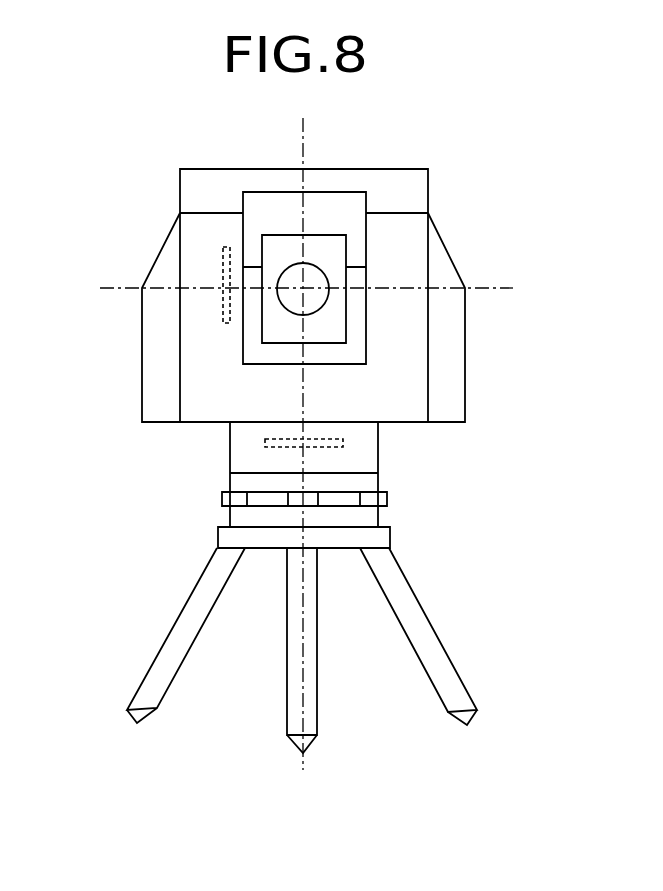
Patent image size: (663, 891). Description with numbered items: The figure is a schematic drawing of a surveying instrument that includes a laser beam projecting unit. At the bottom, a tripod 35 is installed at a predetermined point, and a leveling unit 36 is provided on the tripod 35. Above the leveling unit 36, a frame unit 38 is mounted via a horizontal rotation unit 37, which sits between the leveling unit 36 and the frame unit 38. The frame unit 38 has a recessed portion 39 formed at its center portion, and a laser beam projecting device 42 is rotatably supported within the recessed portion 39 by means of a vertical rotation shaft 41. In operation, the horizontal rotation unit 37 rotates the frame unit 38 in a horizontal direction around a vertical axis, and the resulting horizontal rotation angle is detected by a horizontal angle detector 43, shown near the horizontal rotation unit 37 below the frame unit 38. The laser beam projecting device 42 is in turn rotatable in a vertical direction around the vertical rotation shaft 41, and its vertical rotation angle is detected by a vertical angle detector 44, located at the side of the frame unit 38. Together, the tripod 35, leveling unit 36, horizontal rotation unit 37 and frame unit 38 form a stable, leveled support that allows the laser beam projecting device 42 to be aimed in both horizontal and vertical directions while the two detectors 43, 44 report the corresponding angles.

The tripod 35 is at (445, 648).
The leveling unit 36 is at (380, 512).
The horizontal rotation unit 37 is at (378, 445).
The frame unit 38 is at (465, 375).
The recessed portion 39 is at (355, 350).
The vertical rotation shaft 41 is at (352, 268).
The laser beam projecting device 42 is at (260, 333).
The horizontal angle detector 43 is at (265, 444).
The vertical angle detector 44 is at (223, 257).